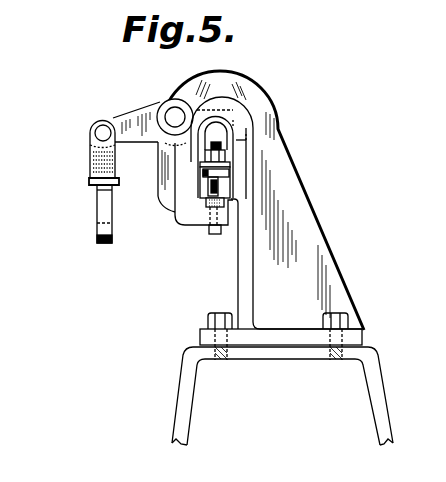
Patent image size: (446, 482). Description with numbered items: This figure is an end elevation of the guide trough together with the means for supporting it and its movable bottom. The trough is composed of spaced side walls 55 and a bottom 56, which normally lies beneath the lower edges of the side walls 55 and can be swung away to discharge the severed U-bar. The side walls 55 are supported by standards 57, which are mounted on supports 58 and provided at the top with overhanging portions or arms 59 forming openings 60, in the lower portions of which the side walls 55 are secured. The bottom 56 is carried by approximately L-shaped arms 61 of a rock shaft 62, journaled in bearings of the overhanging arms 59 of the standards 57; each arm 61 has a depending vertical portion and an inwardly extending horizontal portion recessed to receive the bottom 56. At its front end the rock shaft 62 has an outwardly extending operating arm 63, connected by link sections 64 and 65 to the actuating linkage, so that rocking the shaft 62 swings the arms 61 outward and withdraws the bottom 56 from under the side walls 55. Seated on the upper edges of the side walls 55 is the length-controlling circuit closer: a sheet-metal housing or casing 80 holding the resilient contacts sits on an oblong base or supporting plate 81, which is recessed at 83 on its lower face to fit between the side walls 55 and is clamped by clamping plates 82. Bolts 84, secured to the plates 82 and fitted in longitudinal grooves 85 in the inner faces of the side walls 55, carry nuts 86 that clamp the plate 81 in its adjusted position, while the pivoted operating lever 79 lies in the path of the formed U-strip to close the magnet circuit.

The side walls 55 is at (198, 180).
The bottom 56 is at (236, 213).
The standards 57 is at (252, 236).
The supports 58 is at (188, 387).
The overhanging portions or arms 59 is at (168, 190).
The openings 60 is at (237, 148).
The L-shaped arms 61 is at (200, 218).
The rock shaft 62 is at (176, 117).
The operating arm 63 is at (114, 117).
The link section 64 is at (94, 153).
The link section 65 is at (97, 204).
The pivoted operating lever 79 is at (222, 184).
The housing or casing 80 is at (217, 127).
The base or supporting plate 81 is at (222, 152).
The clamping plates 82 is at (228, 175).
The recess 83 is at (230, 163).
The bolts 84 is at (235, 133).
The longitudinal grooves 85 is at (229, 170).
The nuts 86 is at (205, 111).